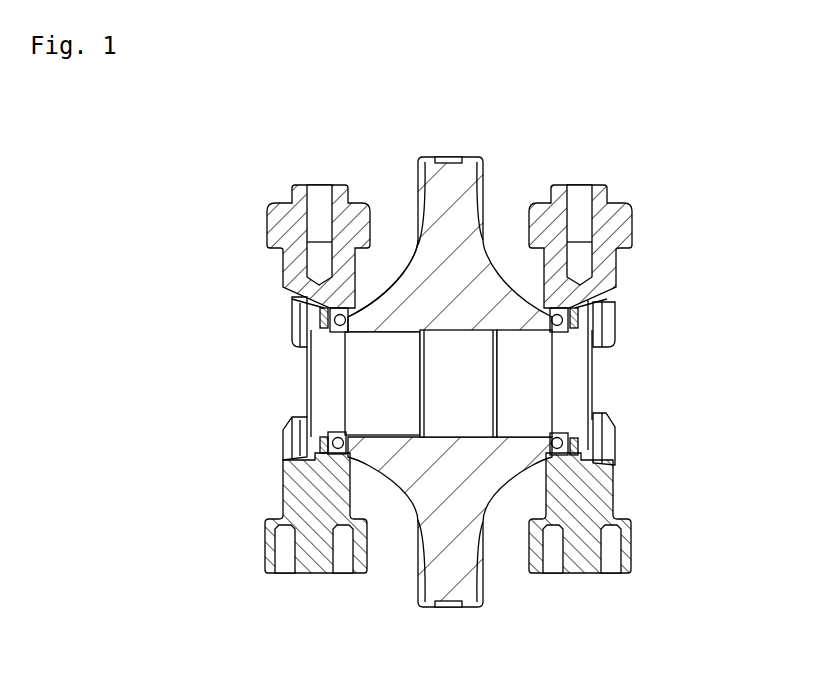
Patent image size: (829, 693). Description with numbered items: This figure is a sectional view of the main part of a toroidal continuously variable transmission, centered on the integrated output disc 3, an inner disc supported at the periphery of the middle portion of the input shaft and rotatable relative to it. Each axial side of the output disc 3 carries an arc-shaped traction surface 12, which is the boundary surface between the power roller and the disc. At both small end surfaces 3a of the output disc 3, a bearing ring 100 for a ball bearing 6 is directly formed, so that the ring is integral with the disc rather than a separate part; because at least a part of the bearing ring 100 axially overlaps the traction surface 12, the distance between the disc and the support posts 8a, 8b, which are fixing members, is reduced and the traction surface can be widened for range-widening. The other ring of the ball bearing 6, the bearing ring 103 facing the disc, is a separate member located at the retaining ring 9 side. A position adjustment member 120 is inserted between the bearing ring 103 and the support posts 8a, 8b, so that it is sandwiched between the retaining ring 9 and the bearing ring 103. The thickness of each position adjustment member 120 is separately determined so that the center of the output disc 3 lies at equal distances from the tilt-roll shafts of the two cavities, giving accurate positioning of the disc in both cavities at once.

The output disc 3 is at (460, 176).
The small end surface 3a is at (590, 288).
The ball bearing 6 is at (347, 318).
The support post 8a is at (458, 359).
The support post 8b is at (290, 212).
The retaining ring 9 is at (287, 453).
The traction surface 12 is at (407, 268).
The bearing ring 100 is at (548, 320).
The bearing ring 103 is at (307, 357).
The position adjustment member 120 is at (288, 285).